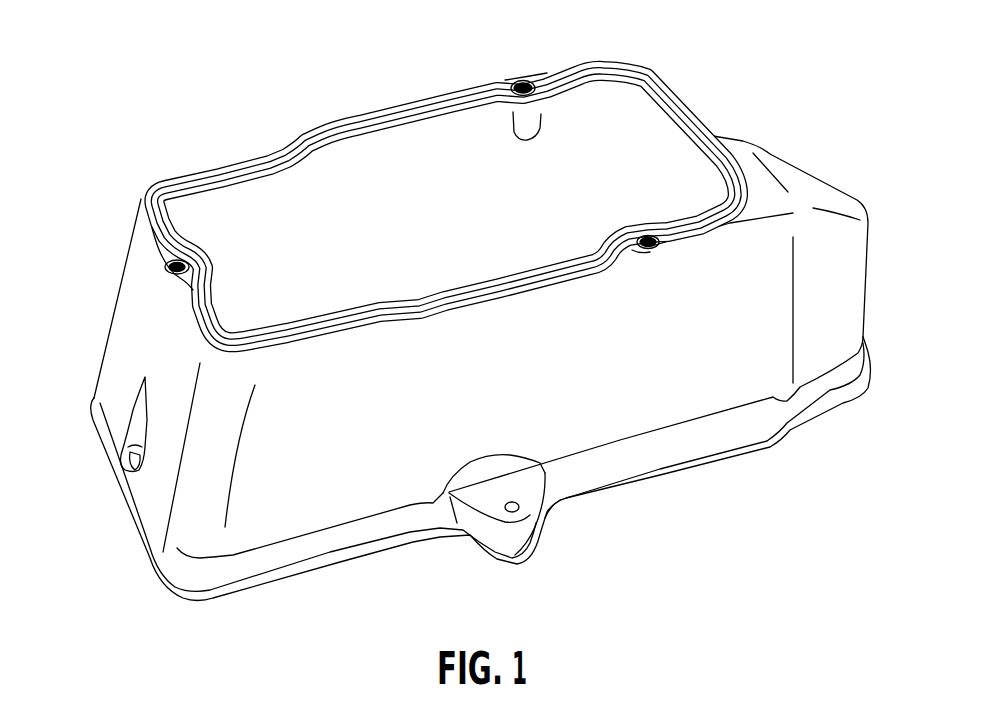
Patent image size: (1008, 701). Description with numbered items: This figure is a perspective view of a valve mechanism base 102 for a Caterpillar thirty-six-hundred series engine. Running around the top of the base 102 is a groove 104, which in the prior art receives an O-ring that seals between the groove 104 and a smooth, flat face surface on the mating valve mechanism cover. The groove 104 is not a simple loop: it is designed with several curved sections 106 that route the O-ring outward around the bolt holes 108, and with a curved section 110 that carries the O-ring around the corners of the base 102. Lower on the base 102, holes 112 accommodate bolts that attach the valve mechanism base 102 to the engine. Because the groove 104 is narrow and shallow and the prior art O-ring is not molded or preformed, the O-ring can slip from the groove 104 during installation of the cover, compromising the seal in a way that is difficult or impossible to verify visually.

The valve mechanism base 102 is at (788, 172).
The groove 104 is at (632, 78).
The curved sections 106 is at (542, 93).
The bolt holes 108 is at (521, 82).
The curved section 110 is at (592, 75).
The holes 112 is at (140, 452).